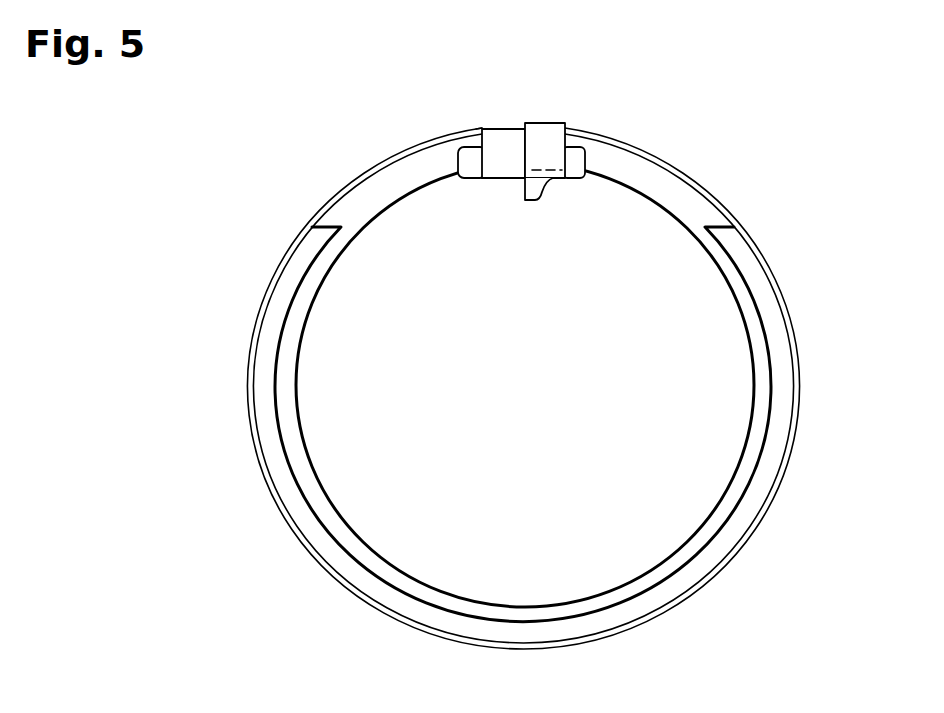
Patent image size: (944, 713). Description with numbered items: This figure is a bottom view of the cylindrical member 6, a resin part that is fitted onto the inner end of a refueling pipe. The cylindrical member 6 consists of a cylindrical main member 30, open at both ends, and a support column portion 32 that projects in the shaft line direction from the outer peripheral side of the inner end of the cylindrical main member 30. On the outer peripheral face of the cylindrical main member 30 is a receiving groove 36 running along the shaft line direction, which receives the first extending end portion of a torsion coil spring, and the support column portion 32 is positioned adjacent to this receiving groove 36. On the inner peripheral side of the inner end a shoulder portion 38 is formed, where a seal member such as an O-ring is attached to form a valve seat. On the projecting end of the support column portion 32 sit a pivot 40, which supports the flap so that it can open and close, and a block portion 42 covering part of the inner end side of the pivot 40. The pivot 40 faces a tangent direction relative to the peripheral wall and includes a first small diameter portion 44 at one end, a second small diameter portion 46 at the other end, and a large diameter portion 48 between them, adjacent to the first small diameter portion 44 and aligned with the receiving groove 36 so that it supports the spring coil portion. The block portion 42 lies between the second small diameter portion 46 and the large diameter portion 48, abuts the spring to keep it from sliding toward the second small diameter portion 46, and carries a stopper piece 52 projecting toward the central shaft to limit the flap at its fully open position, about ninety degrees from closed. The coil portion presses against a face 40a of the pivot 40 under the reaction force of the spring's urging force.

The cylindrical member 6 is at (694, 155).
The cylindrical main member 30 is at (340, 192).
The support column portion 32 is at (507, 126).
The receiving groove 36 is at (487, 125).
The shoulder portion 38 is at (758, 370).
The pivot 40 is at (483, 185).
The face of the pivot 40a is at (490, 179).
The block portion 42 is at (542, 135).
The first small diameter portion 44 is at (468, 179).
The second small diameter portion 46 is at (586, 179).
The large diameter portion 48 is at (507, 179).
The stopper piece 52 is at (533, 201).